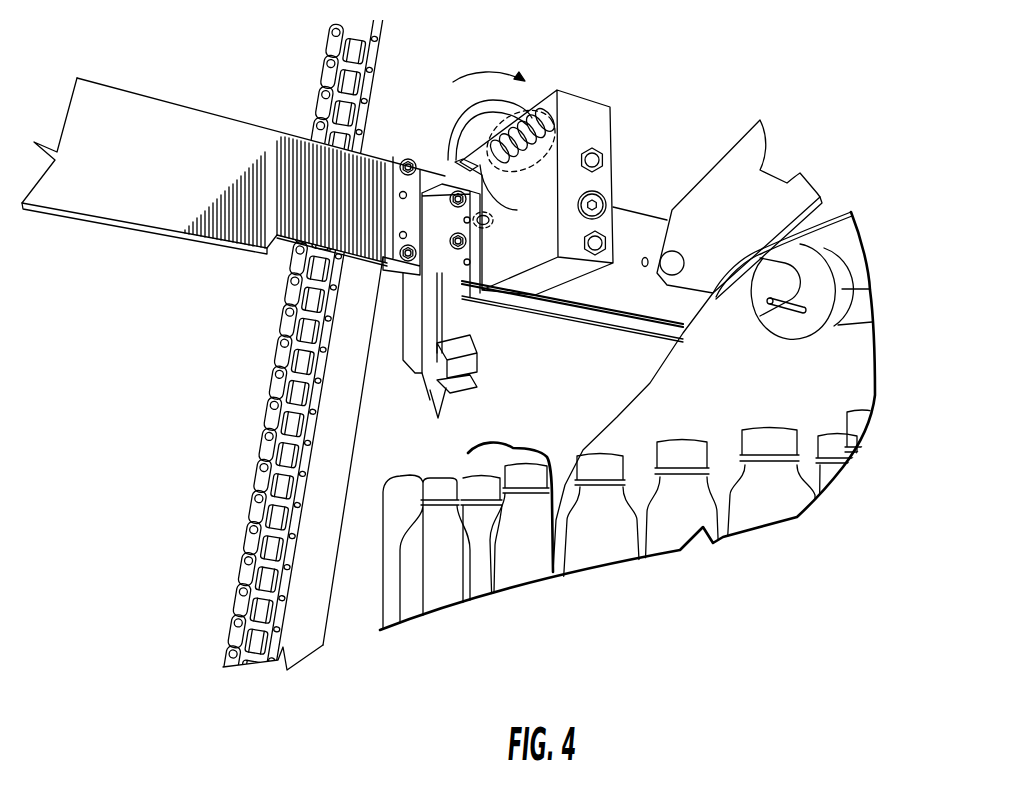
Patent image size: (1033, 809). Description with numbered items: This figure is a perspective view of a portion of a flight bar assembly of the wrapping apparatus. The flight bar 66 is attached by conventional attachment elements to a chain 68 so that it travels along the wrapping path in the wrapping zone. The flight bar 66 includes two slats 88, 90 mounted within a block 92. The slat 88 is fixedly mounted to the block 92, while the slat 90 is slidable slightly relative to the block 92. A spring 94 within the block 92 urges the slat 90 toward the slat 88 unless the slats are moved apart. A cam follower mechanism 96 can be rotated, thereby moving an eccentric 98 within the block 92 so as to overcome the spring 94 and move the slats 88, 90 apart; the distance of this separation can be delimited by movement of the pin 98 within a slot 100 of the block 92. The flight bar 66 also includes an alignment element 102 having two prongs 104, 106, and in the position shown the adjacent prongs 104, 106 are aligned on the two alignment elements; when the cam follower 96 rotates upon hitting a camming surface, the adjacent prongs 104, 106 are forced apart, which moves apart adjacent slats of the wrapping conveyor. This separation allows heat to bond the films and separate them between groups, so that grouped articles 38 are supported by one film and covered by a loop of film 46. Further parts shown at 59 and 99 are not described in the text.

The articles 38 is at (597, 555).
The film 46 is at (838, 212).
The flap 59 is at (768, 157).
The flight bar 66 is at (172, 282).
The chain 68 is at (330, 72).
The slat 88 is at (598, 290).
The slat 90 is at (572, 322).
The block 92 is at (575, 113).
The spring 94 is at (530, 110).
The cam follower mechanism 96 is at (483, 100).
The eccentric 98 is at (487, 227).
The pivot pin 99 is at (458, 163).
The slot 100 is at (514, 197).
The alignment element 102 is at (492, 422).
The prong 104 is at (450, 380).
The prong 106 is at (438, 420).